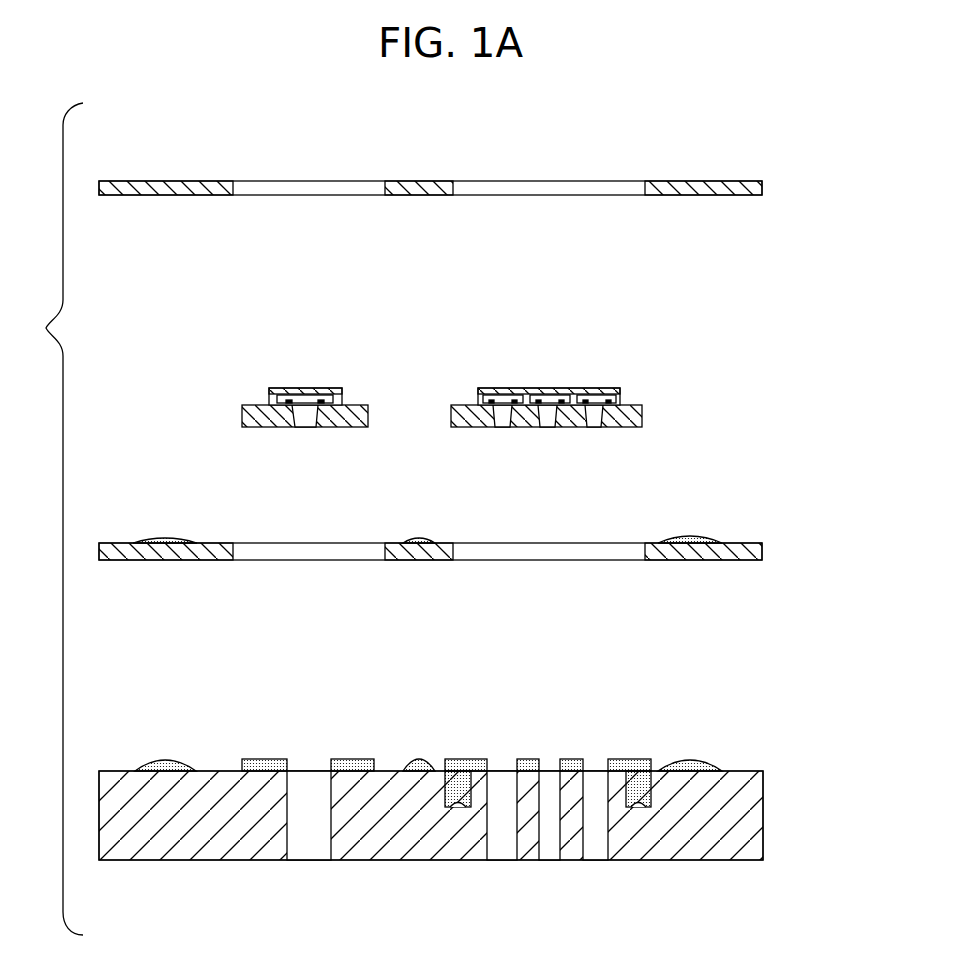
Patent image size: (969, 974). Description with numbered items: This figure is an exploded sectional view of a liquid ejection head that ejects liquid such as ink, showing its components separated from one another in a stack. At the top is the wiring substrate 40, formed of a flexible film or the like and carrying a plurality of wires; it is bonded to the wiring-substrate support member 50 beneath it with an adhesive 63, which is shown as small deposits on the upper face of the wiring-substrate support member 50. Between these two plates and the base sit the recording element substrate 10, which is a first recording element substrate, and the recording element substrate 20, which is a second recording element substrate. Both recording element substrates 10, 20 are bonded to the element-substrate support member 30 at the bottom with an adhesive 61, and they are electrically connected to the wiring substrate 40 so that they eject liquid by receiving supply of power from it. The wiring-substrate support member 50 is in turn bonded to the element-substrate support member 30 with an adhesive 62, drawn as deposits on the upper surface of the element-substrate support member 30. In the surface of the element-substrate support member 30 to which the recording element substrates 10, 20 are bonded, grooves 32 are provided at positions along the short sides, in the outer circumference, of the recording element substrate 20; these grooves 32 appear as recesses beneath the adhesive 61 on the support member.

The recording element substrate 10 is at (344, 356).
The recording element substrate 20 is at (611, 356).
The element-substrate support member 30 is at (750, 812).
The groove 32 is at (450, 808).
The wiring substrate 40 is at (733, 188).
The wiring-substrate support member 50 is at (747, 555).
The adhesive 61 is at (260, 760).
The adhesive 62 is at (163, 760).
The adhesive 63 is at (163, 540).